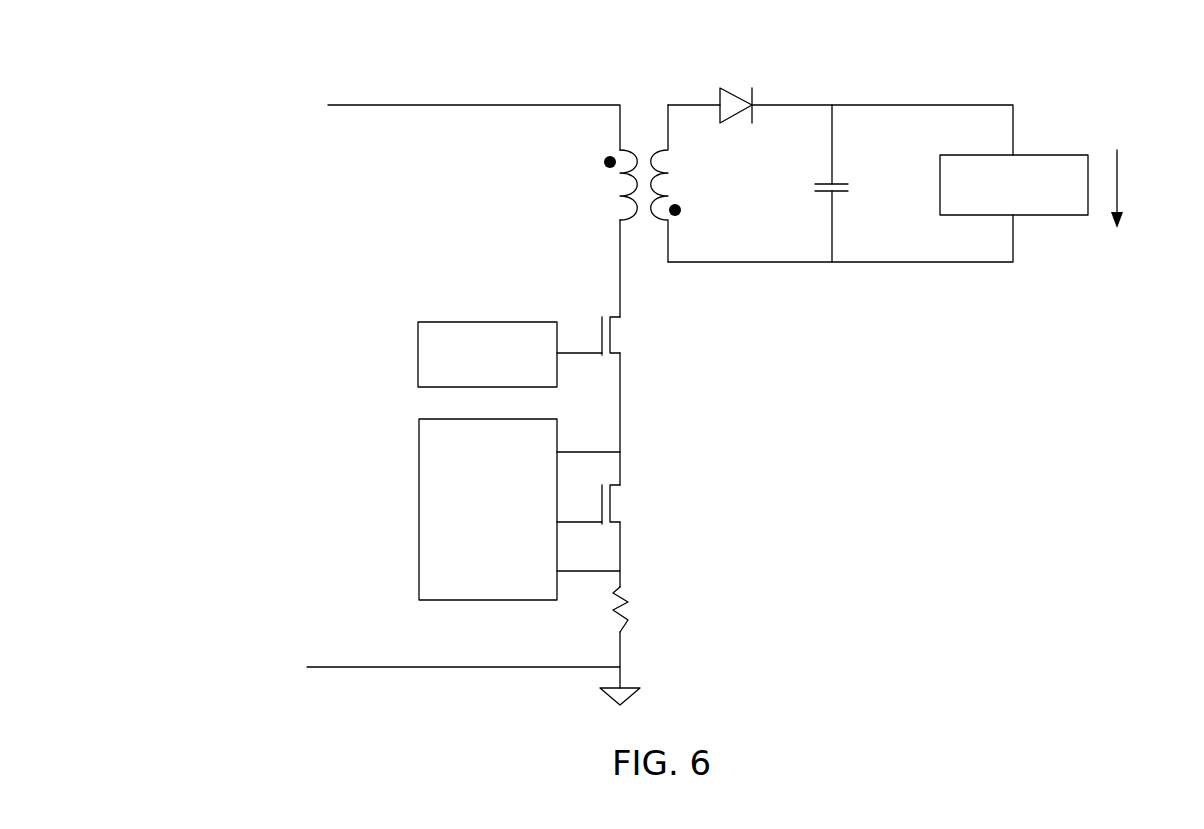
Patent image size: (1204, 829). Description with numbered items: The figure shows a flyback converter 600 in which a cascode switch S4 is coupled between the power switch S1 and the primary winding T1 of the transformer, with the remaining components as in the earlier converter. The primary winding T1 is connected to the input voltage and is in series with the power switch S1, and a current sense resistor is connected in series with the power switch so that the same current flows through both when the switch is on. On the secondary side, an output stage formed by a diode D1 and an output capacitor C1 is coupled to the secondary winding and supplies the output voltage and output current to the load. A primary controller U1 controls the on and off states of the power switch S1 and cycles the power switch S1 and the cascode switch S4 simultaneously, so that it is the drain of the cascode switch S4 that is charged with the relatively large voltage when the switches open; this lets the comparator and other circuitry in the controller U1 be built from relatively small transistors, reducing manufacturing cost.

The flyback converter 600 is at (213, 74).
The transformer primary winding T1 is at (632, 183).
The diode D1 is at (737, 89).
The output capacitor C1 is at (851, 183).
The cascode switch S4 is at (624, 352).
The power switch S1 is at (690, 504).
The primary controller U1 is at (500, 509).